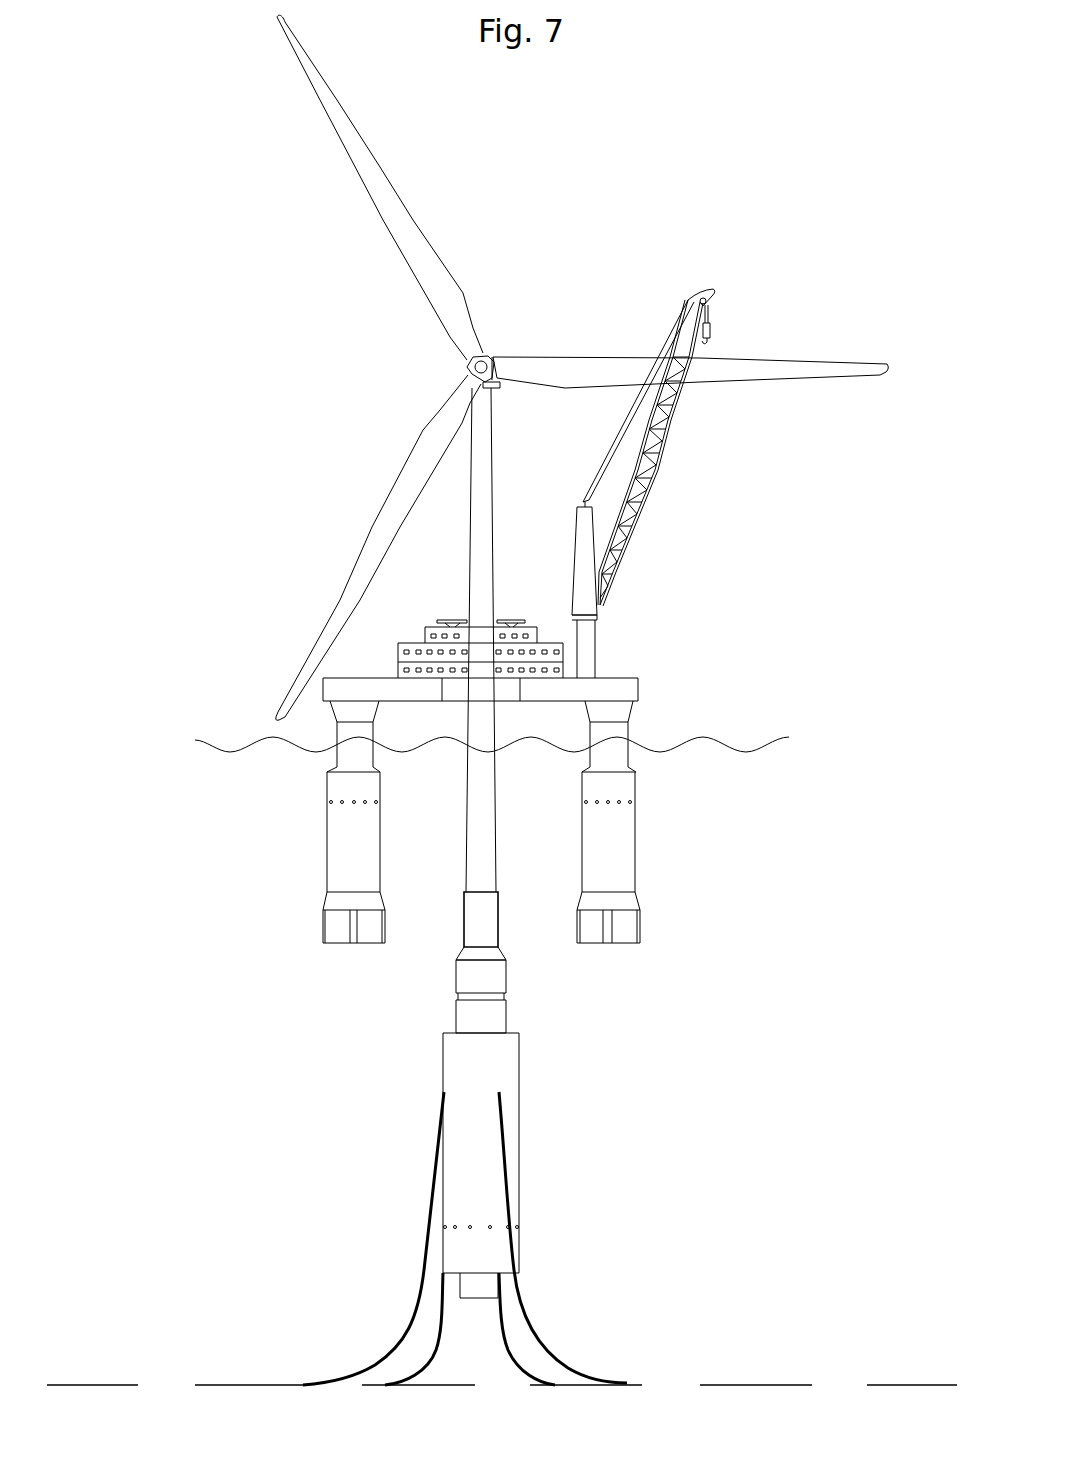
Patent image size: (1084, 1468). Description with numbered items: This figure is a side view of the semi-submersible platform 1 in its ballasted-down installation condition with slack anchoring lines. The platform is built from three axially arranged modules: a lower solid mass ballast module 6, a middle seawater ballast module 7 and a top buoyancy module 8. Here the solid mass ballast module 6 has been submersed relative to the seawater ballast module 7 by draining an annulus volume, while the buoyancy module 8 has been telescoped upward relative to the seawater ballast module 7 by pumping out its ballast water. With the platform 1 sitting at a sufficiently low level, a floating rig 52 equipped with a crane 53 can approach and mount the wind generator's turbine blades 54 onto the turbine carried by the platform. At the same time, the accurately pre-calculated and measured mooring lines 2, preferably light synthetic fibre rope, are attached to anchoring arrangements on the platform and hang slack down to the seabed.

The semi-submersible platform 1 is at (538, 1163).
The mooring lines 2 is at (547, 1353).
The solid mass ballast module 6 is at (484, 1290).
The seawater ballast module 7 is at (485, 1073).
The buoyancy module 8 is at (485, 1006).
The floating rig 52 is at (640, 693).
The crane 53 is at (620, 583).
The turbine blades 54 is at (728, 362).